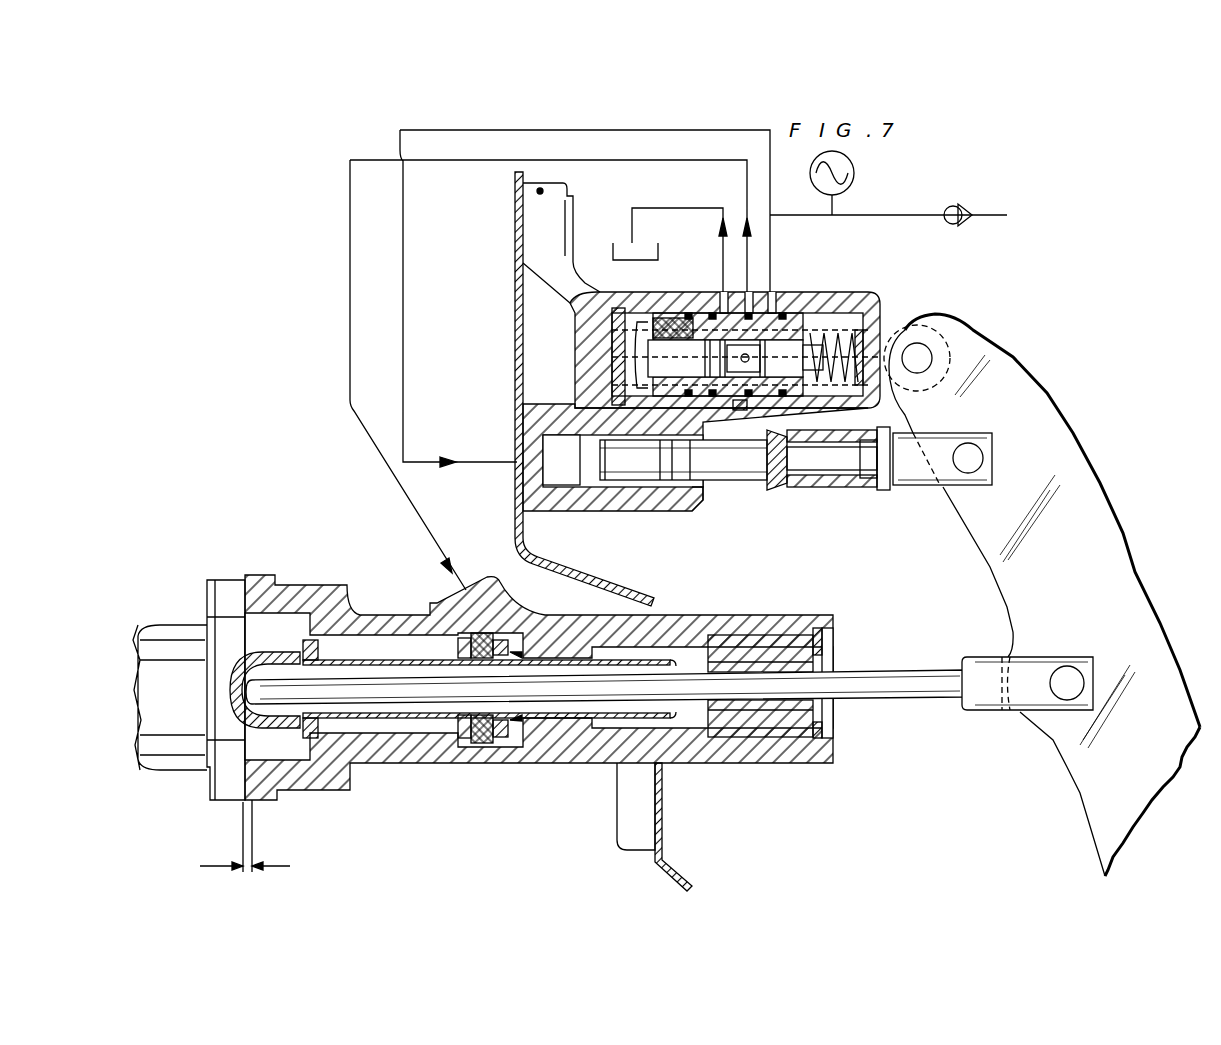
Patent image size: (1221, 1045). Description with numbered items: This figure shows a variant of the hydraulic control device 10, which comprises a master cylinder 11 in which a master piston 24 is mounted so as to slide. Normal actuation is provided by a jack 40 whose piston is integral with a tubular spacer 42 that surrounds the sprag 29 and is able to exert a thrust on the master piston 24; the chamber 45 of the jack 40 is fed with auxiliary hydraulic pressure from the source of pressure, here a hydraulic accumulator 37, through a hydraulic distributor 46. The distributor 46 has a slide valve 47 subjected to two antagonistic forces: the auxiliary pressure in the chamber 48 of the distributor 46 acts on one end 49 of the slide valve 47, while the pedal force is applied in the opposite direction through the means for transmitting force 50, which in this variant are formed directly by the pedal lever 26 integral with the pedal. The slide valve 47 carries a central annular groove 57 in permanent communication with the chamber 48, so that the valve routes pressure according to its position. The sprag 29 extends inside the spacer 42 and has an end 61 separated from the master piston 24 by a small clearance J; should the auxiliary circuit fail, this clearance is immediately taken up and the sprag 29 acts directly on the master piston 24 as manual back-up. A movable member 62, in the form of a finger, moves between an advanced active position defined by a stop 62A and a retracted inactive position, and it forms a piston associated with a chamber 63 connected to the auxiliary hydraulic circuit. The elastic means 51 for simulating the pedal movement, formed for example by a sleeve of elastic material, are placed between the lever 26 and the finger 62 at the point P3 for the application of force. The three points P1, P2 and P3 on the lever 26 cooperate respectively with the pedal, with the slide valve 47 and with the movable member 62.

The hydraulic control device 10 is at (903, 292).
The master cylinder 11 is at (176, 598).
The master piston 24 is at (287, 648).
The pedal lever 26 is at (1183, 697).
The sprag 29 is at (885, 672).
The hydraulic accumulator 37 is at (855, 172).
The jack 40 is at (473, 742).
The tubular spacer 42 is at (410, 720).
The chamber of the jack 45 is at (494, 748).
The hydraulic distributor 46 is at (711, 312).
The slide valve 47 is at (790, 345).
The chamber of the distributor 48 is at (832, 340).
The end of the slide valve 49 is at (823, 358).
The means for transmitting force 50 is at (1111, 519).
The elastic means for simulating the pedal movement 51 is at (823, 488).
The central annular groove 57 is at (741, 410).
The end of the sprag 61 is at (257, 680).
The movable member 62 is at (750, 480).
The stop 62A is at (697, 502).
The chamber 63 is at (566, 485).
The point for the application of force P1 is at (1072, 677).
The point for the application of force P2 is at (933, 360).
The point for the application of force P3 is at (983, 458).
The clearance J is at (245, 836).